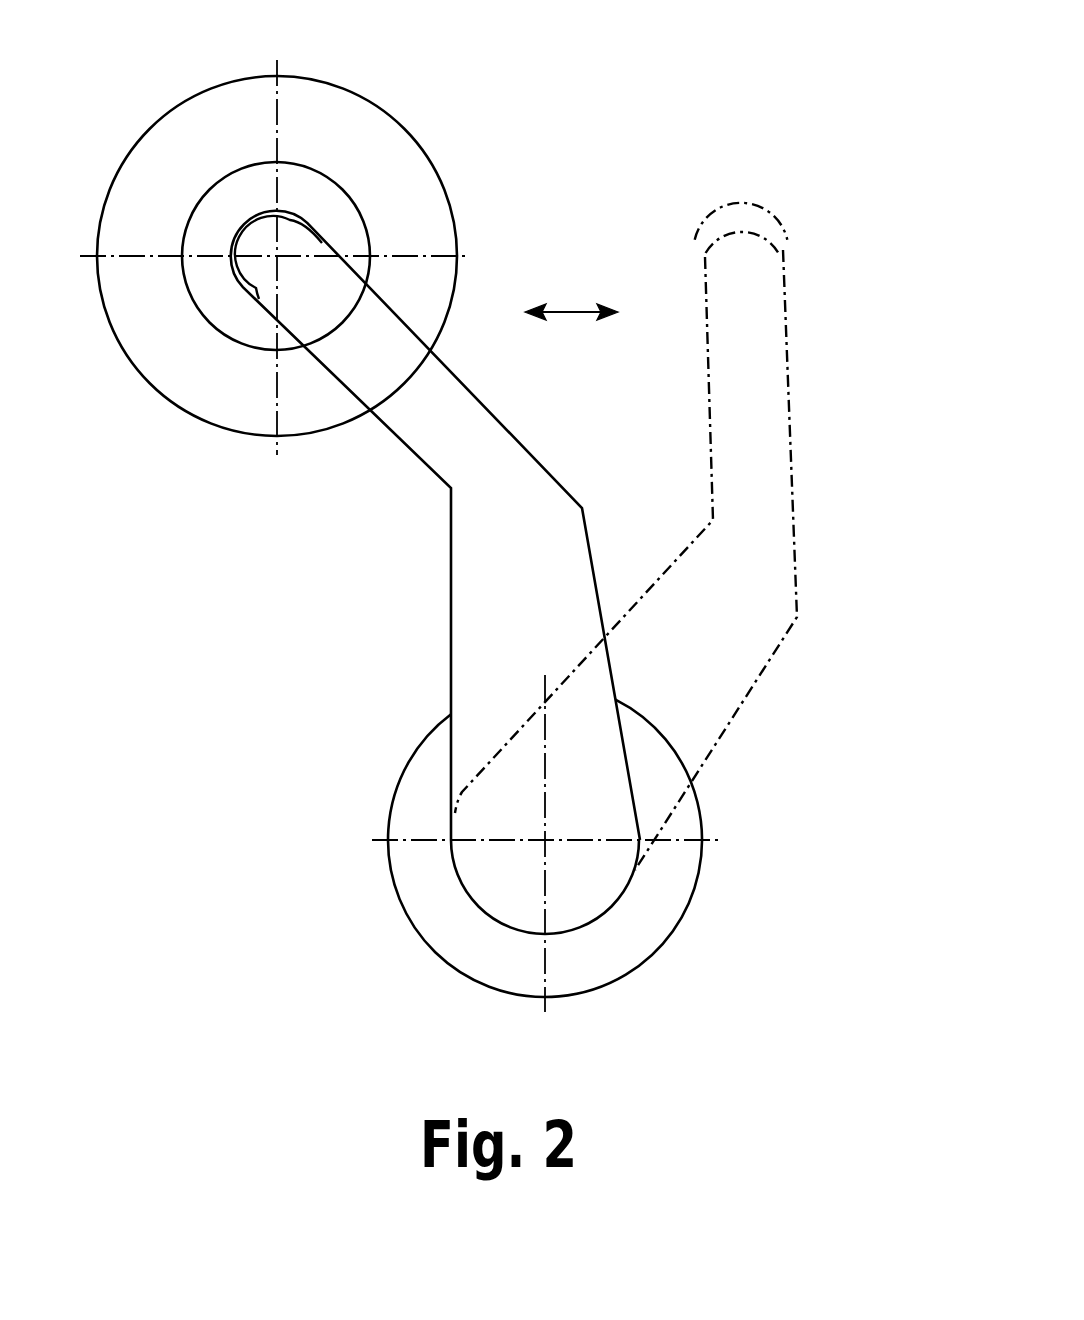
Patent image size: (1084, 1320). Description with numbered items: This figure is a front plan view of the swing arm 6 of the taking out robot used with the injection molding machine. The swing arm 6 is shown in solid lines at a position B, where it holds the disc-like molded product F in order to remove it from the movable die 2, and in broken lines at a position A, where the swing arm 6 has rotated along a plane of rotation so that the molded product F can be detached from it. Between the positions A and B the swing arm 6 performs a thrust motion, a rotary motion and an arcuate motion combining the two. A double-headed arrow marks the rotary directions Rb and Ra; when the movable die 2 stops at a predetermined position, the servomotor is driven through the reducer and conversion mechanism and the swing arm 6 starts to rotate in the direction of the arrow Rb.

The movable die 2 is at (325, 230).
The swing arm 6 is at (478, 527).
The molded product F is at (313, 205).
The position A is at (626, 504).
The position B is at (277, 230).
The arrow Ra is at (651, 310).
The arrow Rb is at (494, 310).